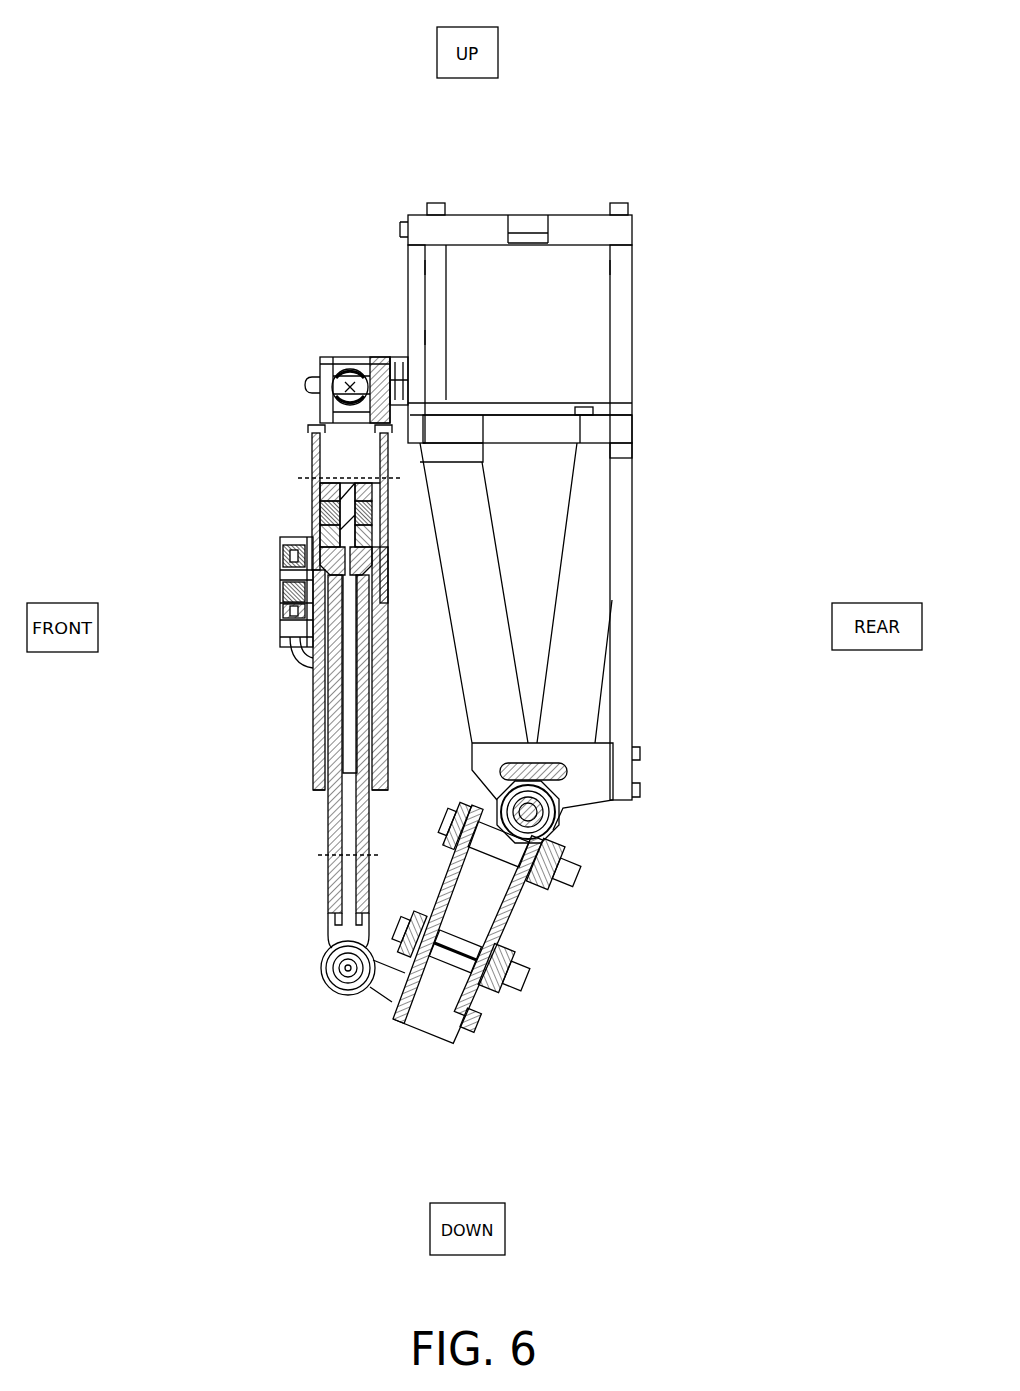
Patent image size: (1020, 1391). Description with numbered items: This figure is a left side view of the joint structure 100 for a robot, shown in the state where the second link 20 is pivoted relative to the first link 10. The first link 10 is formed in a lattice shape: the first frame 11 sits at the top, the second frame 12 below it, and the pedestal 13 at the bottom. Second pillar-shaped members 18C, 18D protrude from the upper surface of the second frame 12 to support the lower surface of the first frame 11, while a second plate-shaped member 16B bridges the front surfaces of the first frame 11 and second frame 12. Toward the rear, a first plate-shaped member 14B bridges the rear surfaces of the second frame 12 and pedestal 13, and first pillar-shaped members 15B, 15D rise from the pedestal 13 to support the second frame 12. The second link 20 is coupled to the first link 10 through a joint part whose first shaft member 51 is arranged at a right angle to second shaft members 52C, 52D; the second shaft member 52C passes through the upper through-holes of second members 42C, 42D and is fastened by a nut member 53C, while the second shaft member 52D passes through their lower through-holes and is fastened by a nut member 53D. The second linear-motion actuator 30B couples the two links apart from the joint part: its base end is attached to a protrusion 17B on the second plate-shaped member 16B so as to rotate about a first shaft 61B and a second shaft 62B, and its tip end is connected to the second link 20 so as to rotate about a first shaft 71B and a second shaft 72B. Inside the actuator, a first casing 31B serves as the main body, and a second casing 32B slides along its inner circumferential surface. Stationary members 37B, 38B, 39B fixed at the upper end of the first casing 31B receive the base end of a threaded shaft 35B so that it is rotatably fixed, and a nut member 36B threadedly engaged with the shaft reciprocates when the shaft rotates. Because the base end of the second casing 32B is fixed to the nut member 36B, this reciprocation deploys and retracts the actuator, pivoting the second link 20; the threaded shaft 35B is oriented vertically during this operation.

The joint structure 100 is at (483, 17).
The first link 10 is at (634, 660).
The first frame 11 is at (563, 215).
The second frame 12 is at (612, 437).
The pedestal 13 is at (588, 775).
The first plate-shaped member 14B is at (622, 608).
The first pillar-shaped member 15B is at (473, 537).
The strut 15D is at (592, 496).
The second plate-shaped member 16B is at (413, 275).
The protrusion 17B is at (600, 398).
The second pillar-shaped member 18C is at (433, 203).
The second pillar-shaped member 18D is at (615, 203).
The second link 20 is at (425, 1040).
The second linear-motion actuator 30B is at (305, 700).
The first casing 31B is at (318, 750).
The second casing 32B is at (333, 865).
The threaded shaft 35B is at (350, 587).
The nut member 36B is at (353, 637).
The stationary member 37B is at (312, 503).
The stationary member 38B is at (312, 518).
The stationary member 39B is at (312, 537).
The second member 42C is at (440, 897).
The second member 42D is at (520, 927).
The first shaft member 51 is at (540, 810).
The second shaft member 52C is at (580, 888).
The second shaft member 52D is at (530, 990).
The nut member 53C is at (580, 862).
The nut member 53D is at (530, 965).
The first shaft 61B is at (305, 387).
The second shaft 62B is at (395, 402).
The first shaft 71B is at (478, 1025).
The second shaft 72B is at (345, 968).